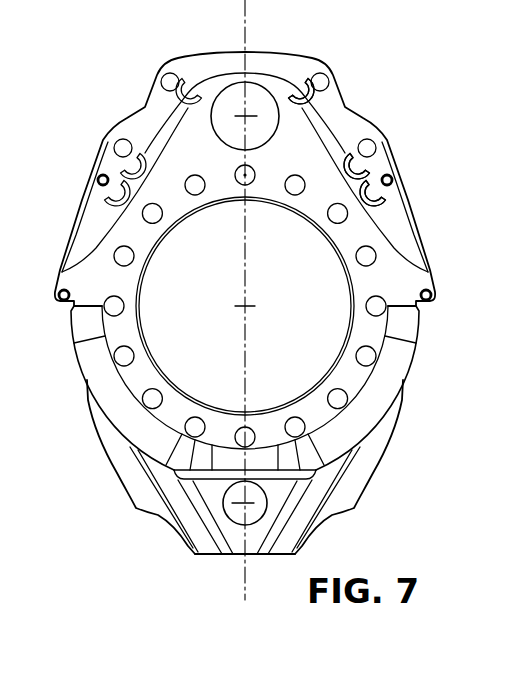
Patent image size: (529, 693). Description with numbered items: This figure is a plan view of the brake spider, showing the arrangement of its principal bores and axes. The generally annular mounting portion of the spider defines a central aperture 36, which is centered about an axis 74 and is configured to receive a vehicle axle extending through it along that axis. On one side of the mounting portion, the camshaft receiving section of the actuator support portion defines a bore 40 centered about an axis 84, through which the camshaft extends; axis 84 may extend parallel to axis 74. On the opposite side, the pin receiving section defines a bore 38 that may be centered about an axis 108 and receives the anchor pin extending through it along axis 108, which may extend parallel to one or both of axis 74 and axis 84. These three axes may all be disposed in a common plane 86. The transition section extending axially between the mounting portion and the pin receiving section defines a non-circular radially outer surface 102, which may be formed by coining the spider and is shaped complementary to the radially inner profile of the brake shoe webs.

The common plane 86 is at (245, 14).
The axis 84 is at (248, 115).
The bore 40 is at (260, 135).
The axis 74 is at (245, 306).
The central aperture 36 is at (330, 334).
The radially outer surface 102 is at (337, 432).
The bore 38 is at (225, 523).
The axis 108 is at (225, 523).